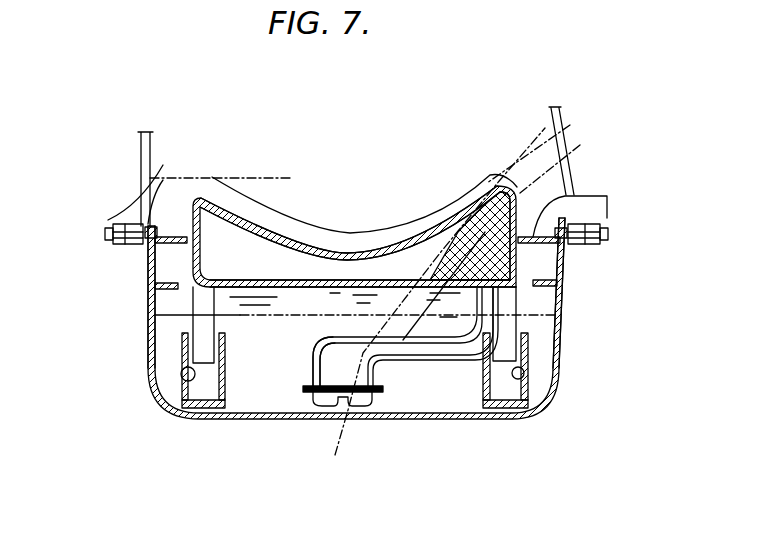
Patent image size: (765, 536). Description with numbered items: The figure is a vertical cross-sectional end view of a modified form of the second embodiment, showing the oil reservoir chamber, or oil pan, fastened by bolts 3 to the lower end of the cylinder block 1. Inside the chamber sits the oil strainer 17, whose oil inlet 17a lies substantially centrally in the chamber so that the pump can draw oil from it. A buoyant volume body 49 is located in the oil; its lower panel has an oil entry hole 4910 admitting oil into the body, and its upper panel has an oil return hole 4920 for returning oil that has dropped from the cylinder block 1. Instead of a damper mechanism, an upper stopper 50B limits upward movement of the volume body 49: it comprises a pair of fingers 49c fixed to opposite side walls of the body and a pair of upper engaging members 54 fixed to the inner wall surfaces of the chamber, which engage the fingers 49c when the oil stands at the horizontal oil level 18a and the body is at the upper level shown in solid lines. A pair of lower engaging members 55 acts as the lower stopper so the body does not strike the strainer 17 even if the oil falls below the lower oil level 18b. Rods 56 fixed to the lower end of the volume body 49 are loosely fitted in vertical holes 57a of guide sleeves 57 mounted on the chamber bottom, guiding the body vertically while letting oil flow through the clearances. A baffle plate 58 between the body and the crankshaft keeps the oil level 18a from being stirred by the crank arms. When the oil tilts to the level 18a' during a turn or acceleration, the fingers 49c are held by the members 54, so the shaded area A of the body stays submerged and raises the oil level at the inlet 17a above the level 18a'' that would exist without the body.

The cylinder block 1 is at (566, 142).
The bolts 3 is at (105, 238).
The oil strainer 17 is at (440, 362).
The oil inlet 17a is at (335, 405).
The horizontal oil level 18a is at (123, 278).
The tilted oil level 18a' is at (343, 434).
The oil level without volume body 18a'' is at (372, 437).
The lower oil level 18b is at (560, 330).
The volume body 49 is at (259, 234).
The oil entry hole 4910 is at (345, 290).
The oil return hole 4920 is at (347, 257).
The fingers 49c is at (217, 178).
The upper stopper 50B is at (177, 231).
The upper engaging members 54 is at (148, 198).
The lower engaging members 55 is at (155, 315).
The rods 56 is at (153, 325).
The guide sleeves 57 is at (163, 400).
The vertical holes 57a is at (182, 388).
The baffle plate 58 is at (305, 228).
The shaded area A is at (522, 256).